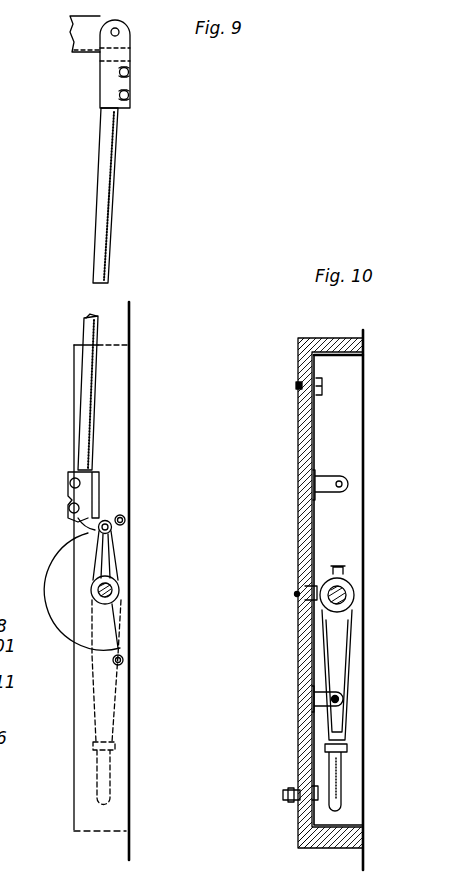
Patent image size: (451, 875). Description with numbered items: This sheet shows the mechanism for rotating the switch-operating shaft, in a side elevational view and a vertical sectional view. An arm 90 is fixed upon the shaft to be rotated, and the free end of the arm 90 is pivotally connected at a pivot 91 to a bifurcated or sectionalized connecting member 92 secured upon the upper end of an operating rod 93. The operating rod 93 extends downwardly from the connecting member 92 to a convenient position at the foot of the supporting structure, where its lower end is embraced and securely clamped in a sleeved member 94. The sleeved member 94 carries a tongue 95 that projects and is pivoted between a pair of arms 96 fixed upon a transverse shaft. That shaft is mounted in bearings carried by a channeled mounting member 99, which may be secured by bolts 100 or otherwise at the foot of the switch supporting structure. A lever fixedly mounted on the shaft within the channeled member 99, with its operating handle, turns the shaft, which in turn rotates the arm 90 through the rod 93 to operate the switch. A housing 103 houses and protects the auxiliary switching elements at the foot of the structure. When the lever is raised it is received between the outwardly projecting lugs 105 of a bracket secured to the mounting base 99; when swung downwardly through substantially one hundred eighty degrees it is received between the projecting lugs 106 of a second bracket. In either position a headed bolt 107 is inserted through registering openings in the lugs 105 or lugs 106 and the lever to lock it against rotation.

In FIG. 9, the arm 90 is at (80, 32).
In FIG. 9, the pivotal connection 91 is at (116, 34).
In FIG. 9, the connecting member 92 is at (108, 82).
In FIG. 9, the operating rod 93 is at (118, 158).
In FIG. 10, the operating rod 93 is at (90, 380).
In FIG. 10, the sleeved member 94 is at (88, 473).
In FIG. 10, the tongue 95 is at (92, 518).
In FIG. 10, the arms 96 is at (100, 555).
In FIG. 10, the channeled mounting member 99 is at (312, 408).
In FIG. 10, the bolts 100 is at (295, 386).
In FIG. 10, the housing 103 is at (78, 630).
In FIG. 10, the lugs 105 is at (325, 483).
In FIG. 10, the lugs 106 is at (325, 698).
In FIG. 10, the headed bolt 107 is at (331, 708).